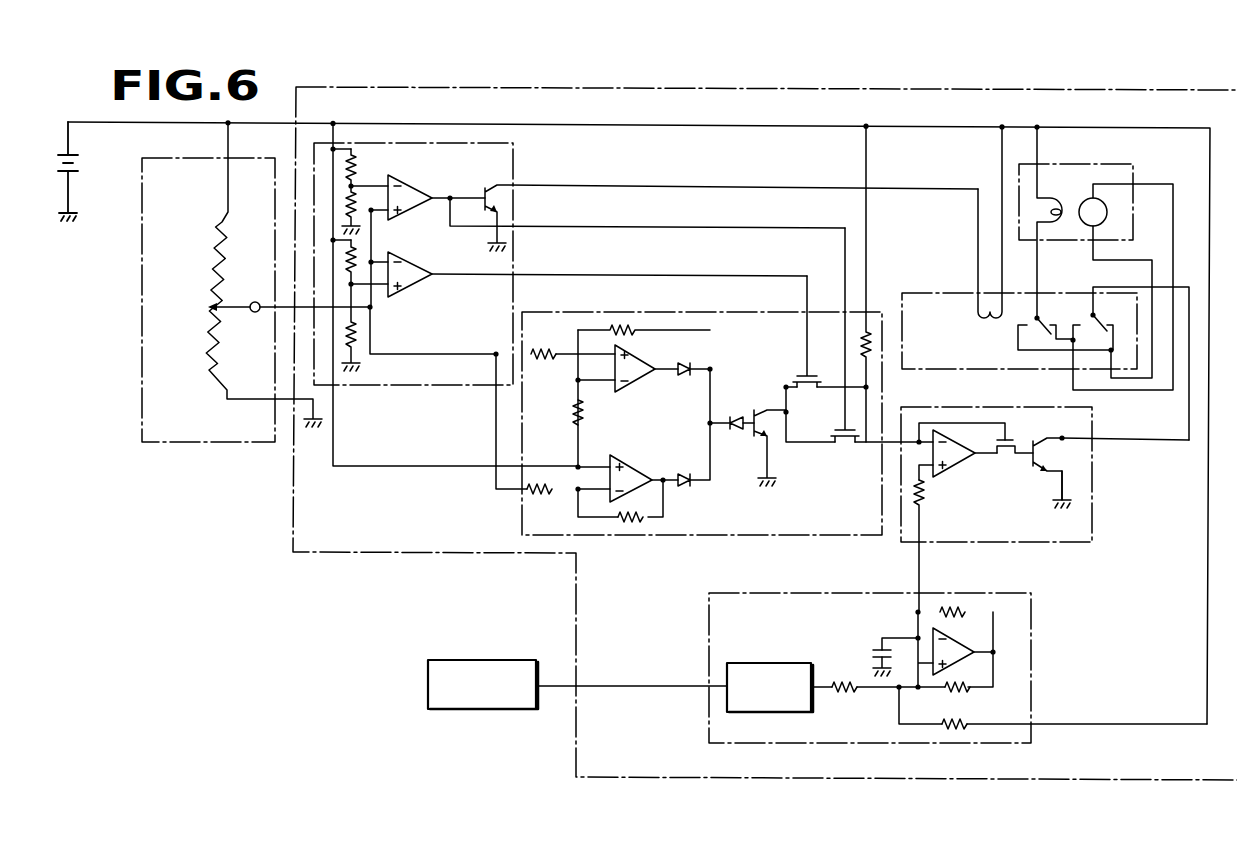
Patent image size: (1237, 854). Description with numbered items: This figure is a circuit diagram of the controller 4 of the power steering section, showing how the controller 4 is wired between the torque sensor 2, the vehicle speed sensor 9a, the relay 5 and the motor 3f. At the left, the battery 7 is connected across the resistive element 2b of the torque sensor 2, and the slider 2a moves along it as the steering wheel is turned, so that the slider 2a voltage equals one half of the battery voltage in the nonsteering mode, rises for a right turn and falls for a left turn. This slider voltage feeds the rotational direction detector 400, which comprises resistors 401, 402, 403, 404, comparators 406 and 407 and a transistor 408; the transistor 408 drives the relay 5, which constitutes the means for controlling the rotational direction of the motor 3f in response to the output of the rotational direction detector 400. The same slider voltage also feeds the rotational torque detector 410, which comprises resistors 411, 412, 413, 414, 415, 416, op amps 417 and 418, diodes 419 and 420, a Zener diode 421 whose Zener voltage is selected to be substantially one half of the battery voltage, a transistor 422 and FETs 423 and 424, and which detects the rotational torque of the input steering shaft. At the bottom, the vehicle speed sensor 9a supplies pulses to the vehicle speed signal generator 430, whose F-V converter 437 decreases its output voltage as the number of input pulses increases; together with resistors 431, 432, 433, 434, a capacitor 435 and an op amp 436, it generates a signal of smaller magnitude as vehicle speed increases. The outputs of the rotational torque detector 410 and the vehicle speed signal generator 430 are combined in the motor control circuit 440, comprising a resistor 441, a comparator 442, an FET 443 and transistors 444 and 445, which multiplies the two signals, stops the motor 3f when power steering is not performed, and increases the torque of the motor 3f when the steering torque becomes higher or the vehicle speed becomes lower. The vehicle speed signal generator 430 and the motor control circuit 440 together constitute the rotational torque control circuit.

The torque sensor 2 is at (173, 445).
The slider 2a is at (236, 311).
The resistive element 2b is at (198, 330).
The motor 3f is at (1093, 164).
The controller 4 is at (1155, 92).
The relay 5 is at (952, 385).
The battery 7 is at (80, 164).
The vehicle speed sensor 9a is at (514, 660).
The rotational direction detector 400 is at (514, 168).
The resistor 401 is at (360, 163).
The resistor 402 is at (357, 210).
The resistor 403 is at (358, 255).
The resistor 404 is at (356, 336).
The comparator 406 is at (418, 188).
The comparator 407 is at (416, 264).
The transistor 408 is at (487, 186).
The rotational torque detector 410 is at (822, 314).
The resistor 411 is at (545, 350).
The resistor 412 is at (540, 494).
The resistor 413 is at (574, 409).
The resistor 414 is at (633, 336).
The resistor 415 is at (643, 521).
The resistor 416 is at (869, 334).
The operational amplifier 417 is at (630, 384).
The operational amplifier 418 is at (636, 470).
The diode 419 is at (684, 376).
The diode 420 is at (684, 487).
The Zener diode 421 is at (737, 413).
The transistor 422 is at (762, 410).
The FET 423 is at (806, 384).
The FET 424 is at (845, 444).
The vehicle speed signal generator 430 is at (1034, 636).
The resistor 431 is at (843, 681).
The resistor 432 is at (964, 604).
The resistor 433 is at (958, 692).
The resistor 434 is at (940, 729).
The capacitor 435 is at (874, 649).
The op amp 436 is at (964, 645).
The F-V converter 437 is at (784, 662).
The motor control circuit 440 is at (1094, 514).
The resistor 441 is at (924, 494).
The comparator 442 is at (944, 472).
The FET 443 is at (1006, 452).
The transistor 444 is at (1037, 462).
The transistor 445 is at (1056, 478).